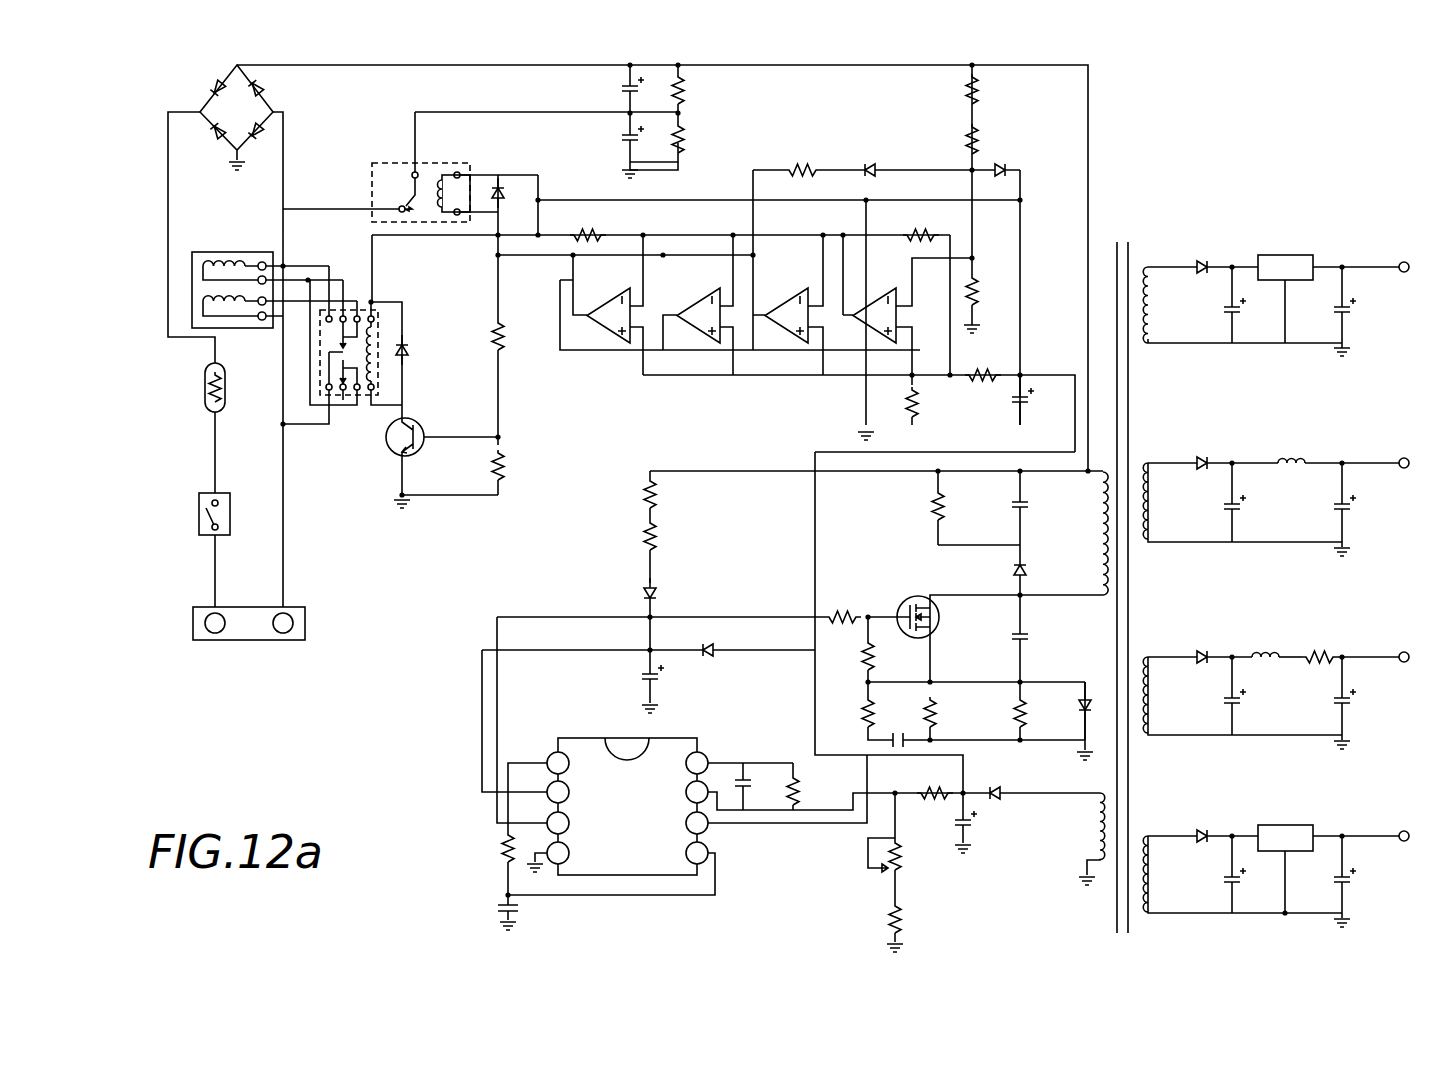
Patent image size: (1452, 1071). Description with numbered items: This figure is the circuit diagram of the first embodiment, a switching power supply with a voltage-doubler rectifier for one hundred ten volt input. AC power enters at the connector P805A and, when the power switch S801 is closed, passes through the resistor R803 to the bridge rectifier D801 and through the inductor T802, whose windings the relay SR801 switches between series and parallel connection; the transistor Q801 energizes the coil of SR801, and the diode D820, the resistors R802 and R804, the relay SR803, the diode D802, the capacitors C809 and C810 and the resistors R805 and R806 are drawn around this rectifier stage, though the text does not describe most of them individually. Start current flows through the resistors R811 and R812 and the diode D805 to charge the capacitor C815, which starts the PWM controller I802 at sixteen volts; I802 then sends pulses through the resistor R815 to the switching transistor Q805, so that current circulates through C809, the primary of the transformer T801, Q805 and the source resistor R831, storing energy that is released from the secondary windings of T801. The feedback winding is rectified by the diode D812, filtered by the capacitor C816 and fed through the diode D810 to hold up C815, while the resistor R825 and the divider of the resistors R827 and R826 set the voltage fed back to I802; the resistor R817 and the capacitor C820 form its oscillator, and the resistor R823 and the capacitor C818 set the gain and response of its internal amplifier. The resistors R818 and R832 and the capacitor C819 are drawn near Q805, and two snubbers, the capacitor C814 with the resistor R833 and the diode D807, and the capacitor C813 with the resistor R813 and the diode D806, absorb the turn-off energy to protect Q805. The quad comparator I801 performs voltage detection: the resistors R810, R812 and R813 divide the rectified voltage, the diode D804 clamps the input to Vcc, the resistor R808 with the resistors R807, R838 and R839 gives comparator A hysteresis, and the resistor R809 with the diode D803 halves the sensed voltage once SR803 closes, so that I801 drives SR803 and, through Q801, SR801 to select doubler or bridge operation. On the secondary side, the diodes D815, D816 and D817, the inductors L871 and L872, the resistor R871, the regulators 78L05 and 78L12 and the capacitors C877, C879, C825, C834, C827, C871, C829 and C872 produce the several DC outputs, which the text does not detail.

The bridge rectifier D801 is at (200, 116).
The resistor R803 is at (182, 425).
The power switch S801 is at (191, 550).
The power input connector P805A is at (249, 640).
The inductor T802 is at (273, 263).
The relay SR801 is at (341, 360).
The diode D820 is at (404, 308).
The transistor Q801 is at (443, 440).
The resistor R802 is at (475, 382).
The resistor R804 is at (475, 469).
The relay SR803 is at (420, 157).
The diode D802 is at (486, 161).
The capacitor C809 is at (589, 89).
The capacitor C810 is at (606, 145).
The resistor R805 is at (717, 94).
The resistor R806 is at (717, 141).
The resistor R807 is at (596, 224).
The positive feedback resistor R808 is at (904, 290).
The resistor R809 is at (804, 147).
The diode D803 is at (902, 147).
The resistor R813 is at (949, 91).
The resistor R812 is at (949, 141).
The diode D804 is at (1008, 147).
The comparator IC I801 is at (790, 334).
The resistor R810 is at (993, 292).
The resistor R839 is at (986, 377).
The resistor R838 is at (935, 401).
The capacitor C813 is at (1039, 400).
The resistor R811 is at (625, 509).
The diode D805 is at (617, 609).
The capacitor C815 is at (629, 682).
The diode D810 is at (653, 656).
The PWM control IC I802 is at (724, 757).
The resistor R817 is at (485, 857).
The capacitor C820 is at (482, 901).
The capacitor C818 is at (743, 766).
The resistor R823 is at (815, 787).
The resistor R825 is at (921, 783).
The resistor R827 is at (906, 848).
The resistor R826 is at (919, 925).
The resistor R818 is at (953, 661).
The capacitor C816 is at (990, 835).
The diode D812 is at (1031, 775).
The resistor R815 is at (842, 596).
The transistor Q805 is at (903, 603).
The resistor R832 is at (953, 711).
The capacitor C819 is at (899, 715).
The resistor R831 is at (949, 715).
The resistor R833 is at (1001, 714).
The diode D807 is at (1058, 712).
The capacitor C814 is at (1045, 638).
The diode D806 is at (988, 571).
The transformer T801 is at (1210, 571).
The capacitor C877 is at (1216, 307).
The voltage regulator 78L05 is at (1349, 299).
The capacitor C879 is at (1364, 311).
The diode D815 is at (1213, 441).
The inductor L871 is at (1339, 444).
The capacitor C825 is at (1216, 505).
The capacitor C834 is at (1363, 509).
The diode D816 is at (1200, 635).
The inductor L872 is at (1265, 633).
The resistor R871 is at (1375, 627).
The capacitor C827 is at (1216, 699).
The capacitor C871 is at (1363, 703).
The diode D817 is at (1203, 814).
The capacitor C829 is at (1210, 877).
The voltage regulator 78L12 is at (1354, 870).
The capacitor C872 is at (1363, 881).